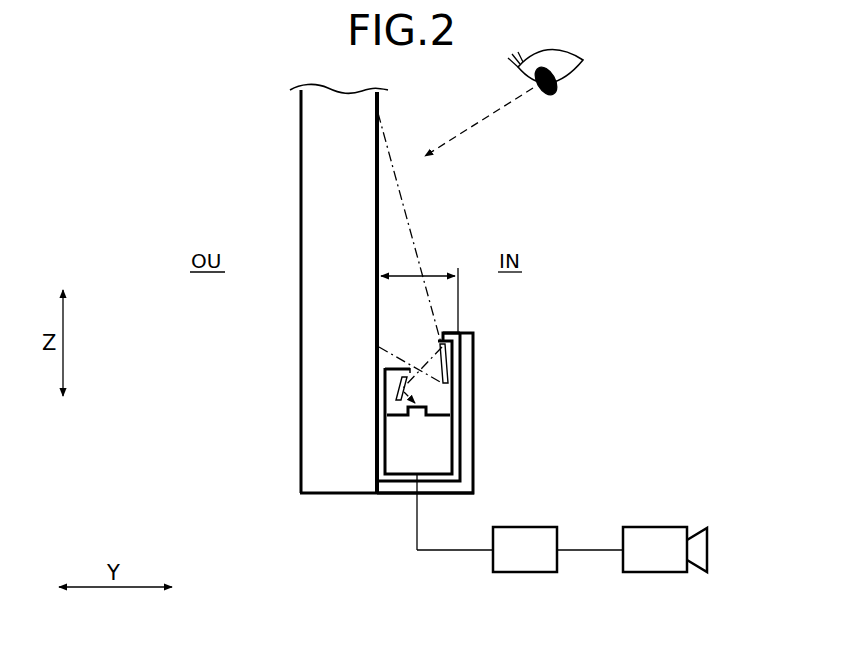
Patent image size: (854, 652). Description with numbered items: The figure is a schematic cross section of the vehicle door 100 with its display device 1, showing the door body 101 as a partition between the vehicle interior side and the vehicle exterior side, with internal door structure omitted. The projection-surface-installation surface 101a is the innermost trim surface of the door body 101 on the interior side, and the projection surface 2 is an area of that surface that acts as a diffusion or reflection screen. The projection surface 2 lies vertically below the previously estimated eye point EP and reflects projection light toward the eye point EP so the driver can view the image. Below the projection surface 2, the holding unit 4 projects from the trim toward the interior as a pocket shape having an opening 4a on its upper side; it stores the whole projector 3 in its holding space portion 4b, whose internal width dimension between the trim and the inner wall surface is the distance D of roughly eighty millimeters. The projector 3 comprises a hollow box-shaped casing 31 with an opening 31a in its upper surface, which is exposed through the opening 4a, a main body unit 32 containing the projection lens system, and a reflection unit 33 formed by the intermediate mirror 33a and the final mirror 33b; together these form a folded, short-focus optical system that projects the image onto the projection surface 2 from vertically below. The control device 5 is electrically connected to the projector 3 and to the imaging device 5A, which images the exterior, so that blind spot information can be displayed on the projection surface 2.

The vehicle door 100 is at (375, 578).
The door body 101 is at (372, 327).
The projection-surface-installation surface 101a is at (380, 103).
The display device 1 is at (378, 504).
The projection surface 2 is at (383, 212).
The projector 3 is at (507, 389).
The casing 31 is at (493, 380).
The opening 31a is at (438, 336).
The main body unit 32 is at (430, 455).
The reflection unit 33 is at (499, 385).
The intermediate mirror 33a is at (410, 391).
The final mirror 33b is at (449, 360).
The holding unit 4 is at (394, 466).
The opening 4a is at (445, 333).
The holding space portion 4b is at (395, 406).
The control device 5 is at (557, 535).
The imaging device 5A is at (708, 532).
The eye point EP is at (573, 80).
The distance D is at (427, 276).